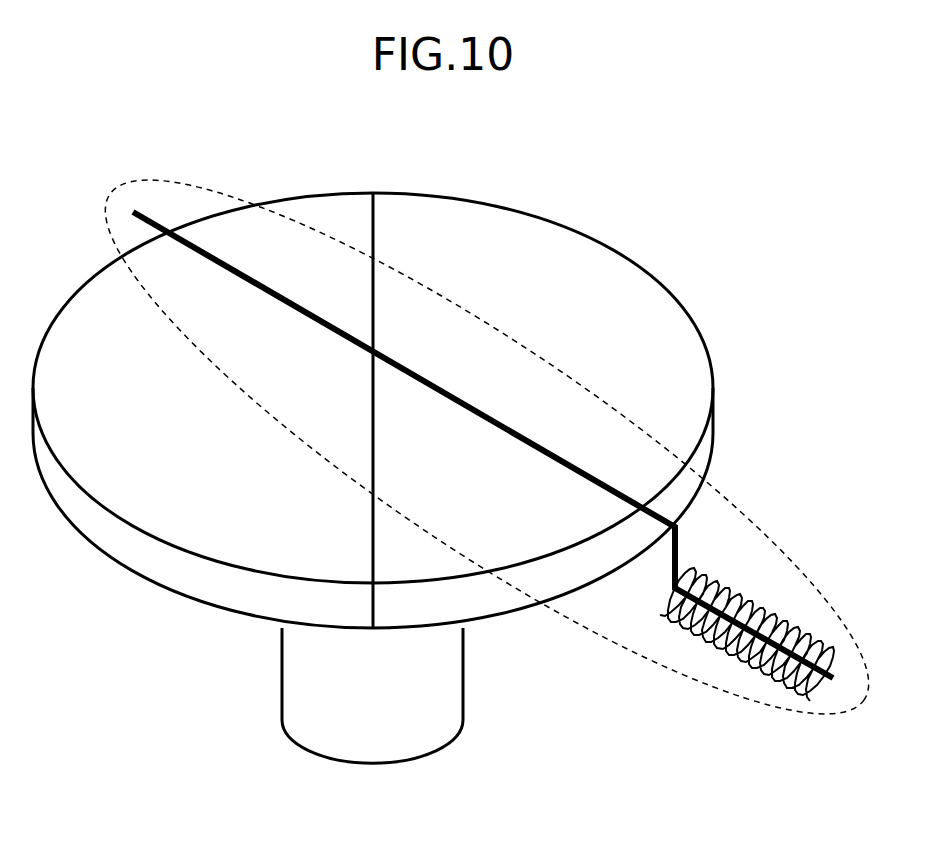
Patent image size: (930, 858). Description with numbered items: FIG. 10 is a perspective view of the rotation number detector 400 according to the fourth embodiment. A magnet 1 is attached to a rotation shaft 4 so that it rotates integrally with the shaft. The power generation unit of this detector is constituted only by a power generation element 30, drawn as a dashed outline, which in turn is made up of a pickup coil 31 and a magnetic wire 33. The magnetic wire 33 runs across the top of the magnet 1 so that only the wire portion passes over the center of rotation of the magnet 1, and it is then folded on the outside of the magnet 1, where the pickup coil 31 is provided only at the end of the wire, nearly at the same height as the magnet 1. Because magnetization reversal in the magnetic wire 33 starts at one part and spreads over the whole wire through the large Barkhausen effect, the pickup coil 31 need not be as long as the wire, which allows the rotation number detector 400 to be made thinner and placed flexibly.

The magnet 1 is at (227, 602).
The rotation shaft 4 is at (448, 678).
The power generation element 30 is at (177, 182).
The pickup coil 31 is at (733, 582).
The magnetic wire 33 is at (530, 432).
The rotation number detector 400 is at (545, 719).